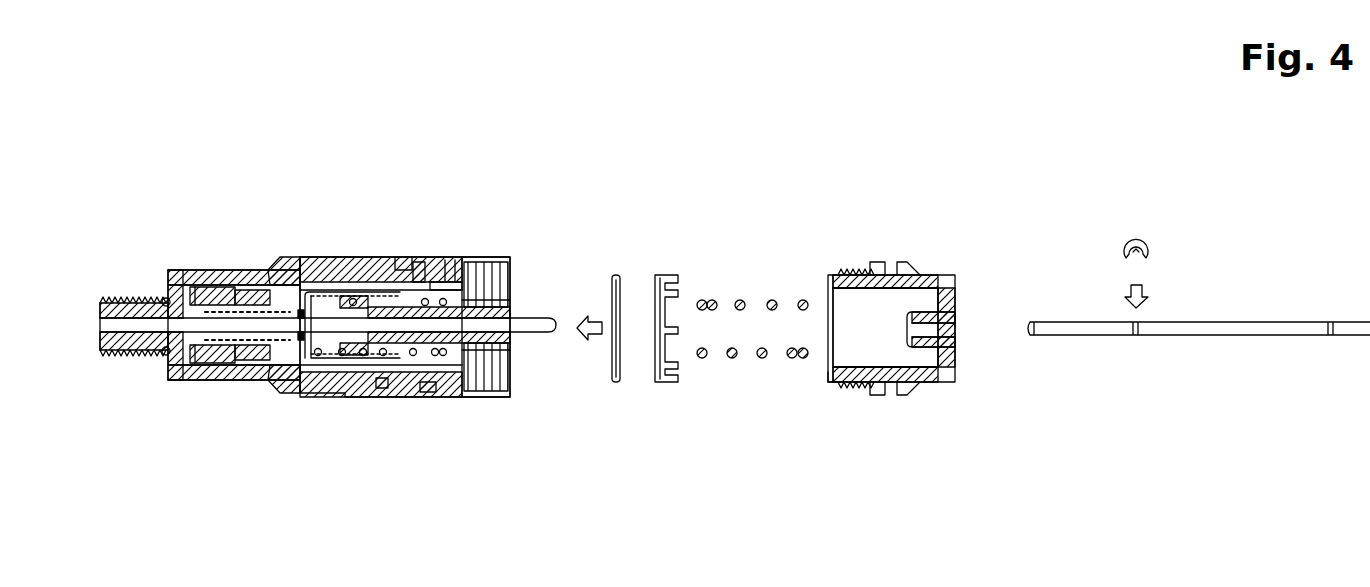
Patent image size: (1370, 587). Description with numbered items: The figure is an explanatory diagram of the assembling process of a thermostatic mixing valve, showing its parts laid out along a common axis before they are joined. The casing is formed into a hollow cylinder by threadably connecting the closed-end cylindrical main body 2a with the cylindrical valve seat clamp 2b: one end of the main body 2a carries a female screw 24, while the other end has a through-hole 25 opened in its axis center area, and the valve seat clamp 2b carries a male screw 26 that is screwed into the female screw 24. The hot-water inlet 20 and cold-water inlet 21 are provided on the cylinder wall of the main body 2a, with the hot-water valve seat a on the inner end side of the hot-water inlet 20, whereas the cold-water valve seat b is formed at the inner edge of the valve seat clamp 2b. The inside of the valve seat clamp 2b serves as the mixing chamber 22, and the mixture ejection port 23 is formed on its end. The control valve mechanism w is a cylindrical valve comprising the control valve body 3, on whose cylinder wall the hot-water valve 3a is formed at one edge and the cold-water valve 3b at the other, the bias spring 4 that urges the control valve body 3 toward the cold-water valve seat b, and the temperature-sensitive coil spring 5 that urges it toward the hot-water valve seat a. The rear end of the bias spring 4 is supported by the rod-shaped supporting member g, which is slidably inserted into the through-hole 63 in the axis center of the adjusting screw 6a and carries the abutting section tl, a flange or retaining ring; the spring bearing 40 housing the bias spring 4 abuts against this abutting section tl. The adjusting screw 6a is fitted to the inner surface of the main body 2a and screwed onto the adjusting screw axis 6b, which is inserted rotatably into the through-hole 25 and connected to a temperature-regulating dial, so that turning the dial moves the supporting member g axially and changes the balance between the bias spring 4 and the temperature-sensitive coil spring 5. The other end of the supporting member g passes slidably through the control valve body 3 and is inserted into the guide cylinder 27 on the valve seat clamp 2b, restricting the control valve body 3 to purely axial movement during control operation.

The main body 2a is at (191, 382).
The valve seat clamp 2b is at (933, 268).
The control valve body 3 is at (421, 258).
The hot-water valve 3a is at (398, 258).
The cold-water valve 3b is at (463, 262).
The bias spring 4 is at (352, 294).
The temperature-sensitive coil spring 5 is at (741, 300).
The adjusting screw 6a is at (275, 360).
The adjusting screw axis 6b is at (239, 352).
The hot-water inlet 20 is at (417, 270).
The cold-water inlet 21 is at (456, 262).
The mixing chamber 22 is at (878, 332).
The mixture ejection port 23 is at (986, 274).
The female screw 24 is at (510, 278).
The through-hole 25 is at (183, 269).
The male screw 26 is at (851, 272).
The guide cylinder 27 is at (942, 343).
The spring bearing 40 is at (339, 358).
The through-hole 63 is at (272, 272).
The hot-water valve seat a is at (387, 392).
The cold-water valve seat b is at (828, 374).
The supporting member g is at (325, 325).
The abutting section tl is at (304, 312).
The control valve mechanism w is at (428, 394).